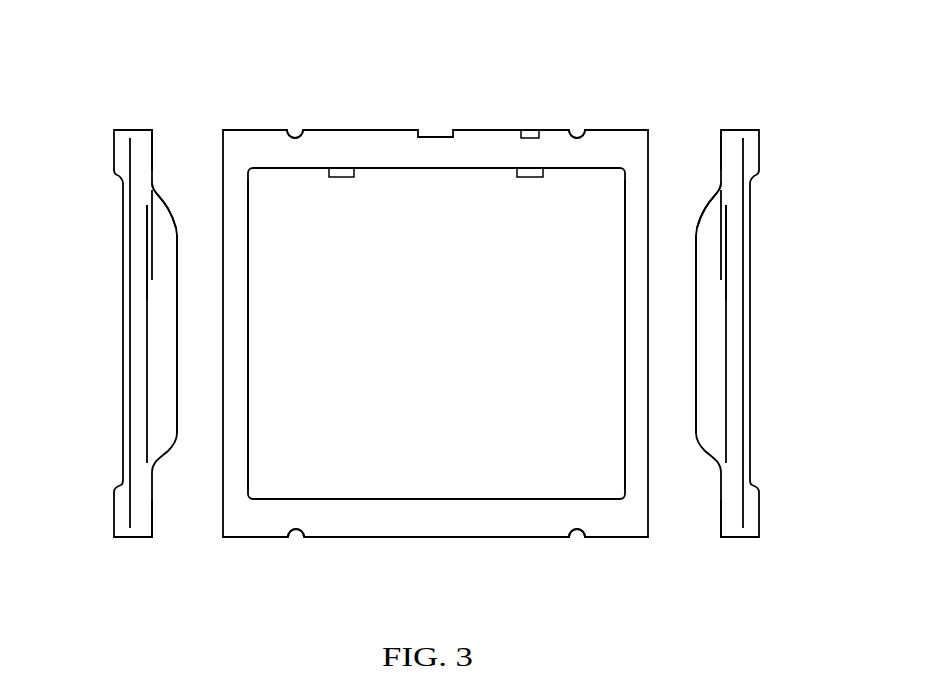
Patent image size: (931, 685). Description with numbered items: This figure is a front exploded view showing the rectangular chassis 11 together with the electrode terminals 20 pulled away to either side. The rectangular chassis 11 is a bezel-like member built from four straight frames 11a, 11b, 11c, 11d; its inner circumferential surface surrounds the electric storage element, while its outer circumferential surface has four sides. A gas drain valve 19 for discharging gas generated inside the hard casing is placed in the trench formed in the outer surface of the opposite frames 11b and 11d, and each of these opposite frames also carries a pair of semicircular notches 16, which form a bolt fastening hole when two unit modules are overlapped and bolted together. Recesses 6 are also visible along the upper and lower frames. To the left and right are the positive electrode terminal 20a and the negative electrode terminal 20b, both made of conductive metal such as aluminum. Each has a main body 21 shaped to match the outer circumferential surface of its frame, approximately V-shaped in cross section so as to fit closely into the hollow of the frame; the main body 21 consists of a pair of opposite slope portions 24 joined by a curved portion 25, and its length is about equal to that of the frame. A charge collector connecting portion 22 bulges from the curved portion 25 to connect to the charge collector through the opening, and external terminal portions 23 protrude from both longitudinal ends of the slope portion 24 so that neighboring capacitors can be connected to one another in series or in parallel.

The rectangular chassis 11 is at (476, 128).
The frame 11a is at (242, 350).
The frame 11b is at (430, 508).
The frame 11c is at (633, 346).
The frame 11d is at (433, 162).
The notch 6 is at (293, 126).
The semicircular notch 16 is at (294, 544).
The gas drain valve 19 is at (343, 172).
The electrode terminal 20 is at (467, 284).
The positive electrode terminal 20a is at (146, 112).
The negative electrode terminal 20b is at (738, 112).
The main body 21 is at (55, 183).
The charge collector connecting portion 22 is at (165, 342).
The external terminal portion 23 is at (120, 147).
The slope portion 24 is at (140, 276).
The curved portion 25 is at (168, 182).